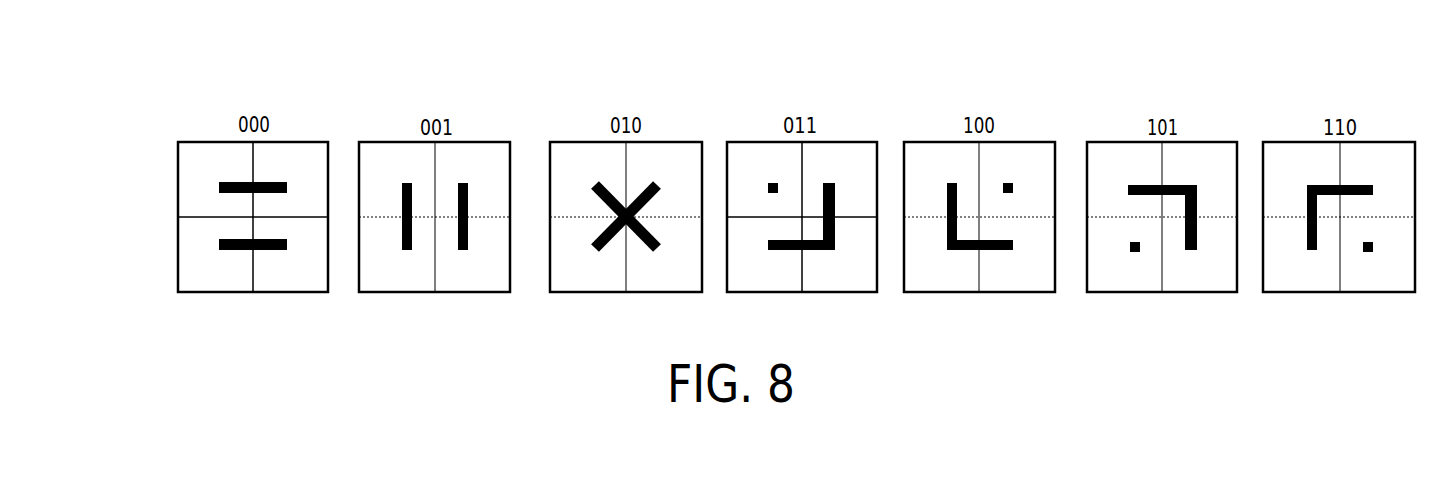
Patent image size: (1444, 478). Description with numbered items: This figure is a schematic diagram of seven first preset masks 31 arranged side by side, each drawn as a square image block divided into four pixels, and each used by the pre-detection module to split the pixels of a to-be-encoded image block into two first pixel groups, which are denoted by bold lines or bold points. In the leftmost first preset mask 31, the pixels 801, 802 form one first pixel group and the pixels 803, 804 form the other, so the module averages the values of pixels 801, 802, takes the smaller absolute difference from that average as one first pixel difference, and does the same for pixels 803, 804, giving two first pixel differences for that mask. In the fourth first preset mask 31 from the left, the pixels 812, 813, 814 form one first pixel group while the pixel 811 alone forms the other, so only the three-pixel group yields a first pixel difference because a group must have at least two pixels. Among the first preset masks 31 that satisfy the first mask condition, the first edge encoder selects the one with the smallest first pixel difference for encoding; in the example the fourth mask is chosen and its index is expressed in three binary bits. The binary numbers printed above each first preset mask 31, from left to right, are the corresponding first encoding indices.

The first preset mask 31 is at (1366, 72).
The pixel 801 is at (193, 153).
The pixel 802 is at (310, 165).
The pixel 803 is at (197, 277).
The pixel 804 is at (303, 285).
The pixel 811 is at (742, 162).
The pixel 812 is at (867, 167).
The pixel 813 is at (740, 275).
The pixel 814 is at (850, 267).